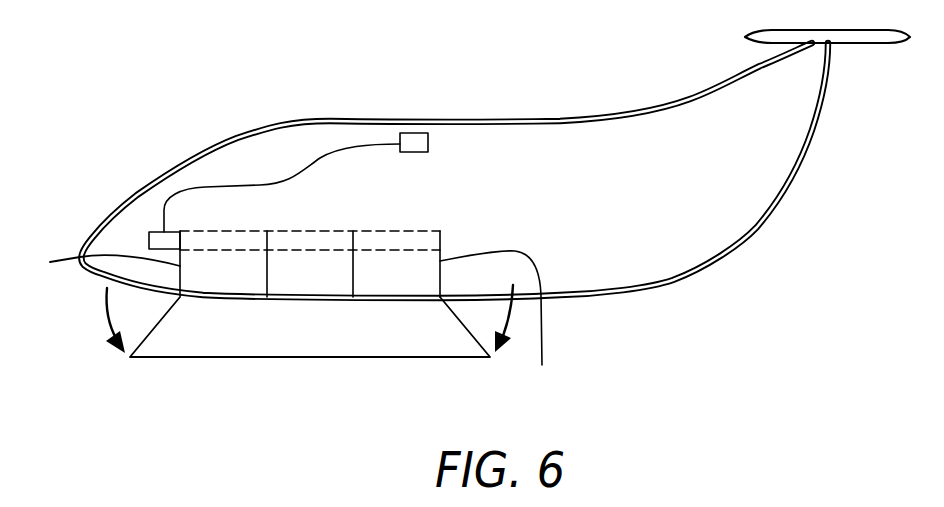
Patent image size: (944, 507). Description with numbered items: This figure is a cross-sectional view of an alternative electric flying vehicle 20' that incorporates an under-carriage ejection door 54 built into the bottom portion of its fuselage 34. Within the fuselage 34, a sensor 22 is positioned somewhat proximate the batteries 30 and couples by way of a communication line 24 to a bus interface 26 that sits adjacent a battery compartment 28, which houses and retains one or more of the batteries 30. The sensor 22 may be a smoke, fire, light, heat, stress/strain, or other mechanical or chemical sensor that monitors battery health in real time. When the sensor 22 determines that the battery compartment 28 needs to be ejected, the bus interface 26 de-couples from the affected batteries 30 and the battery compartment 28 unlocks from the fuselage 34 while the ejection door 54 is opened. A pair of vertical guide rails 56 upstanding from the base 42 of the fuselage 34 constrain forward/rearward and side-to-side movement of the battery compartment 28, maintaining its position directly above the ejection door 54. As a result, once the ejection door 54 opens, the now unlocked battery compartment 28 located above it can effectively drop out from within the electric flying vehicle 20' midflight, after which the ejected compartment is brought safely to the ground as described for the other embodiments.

The electric flying vehicle 20' is at (137, 75).
The sensor 22 is at (415, 142).
The communication line 24 is at (243, 186).
The bus interface 26 is at (149, 242).
The battery compartment 28 is at (387, 231).
The battery 30 is at (297, 277).
The fuselage 34 is at (584, 336).
The base of the fuselage 42 is at (562, 291).
The ejection door 54 is at (313, 360).
The vertical guide rails 56 is at (284, 326).